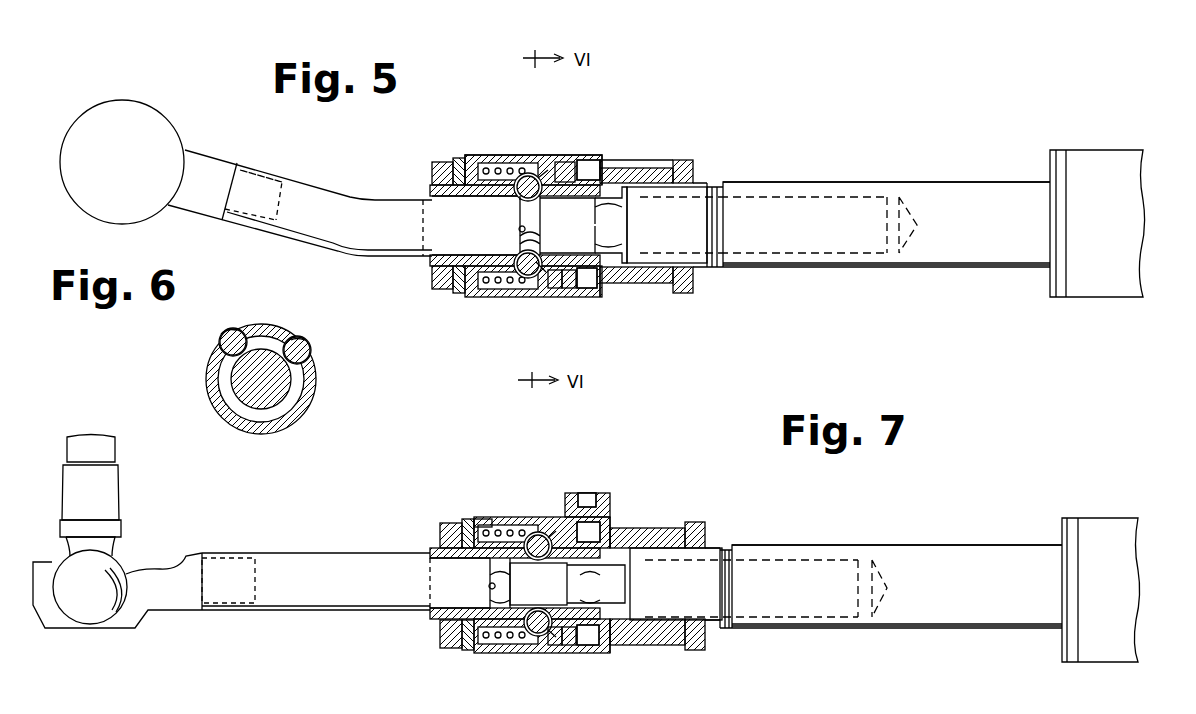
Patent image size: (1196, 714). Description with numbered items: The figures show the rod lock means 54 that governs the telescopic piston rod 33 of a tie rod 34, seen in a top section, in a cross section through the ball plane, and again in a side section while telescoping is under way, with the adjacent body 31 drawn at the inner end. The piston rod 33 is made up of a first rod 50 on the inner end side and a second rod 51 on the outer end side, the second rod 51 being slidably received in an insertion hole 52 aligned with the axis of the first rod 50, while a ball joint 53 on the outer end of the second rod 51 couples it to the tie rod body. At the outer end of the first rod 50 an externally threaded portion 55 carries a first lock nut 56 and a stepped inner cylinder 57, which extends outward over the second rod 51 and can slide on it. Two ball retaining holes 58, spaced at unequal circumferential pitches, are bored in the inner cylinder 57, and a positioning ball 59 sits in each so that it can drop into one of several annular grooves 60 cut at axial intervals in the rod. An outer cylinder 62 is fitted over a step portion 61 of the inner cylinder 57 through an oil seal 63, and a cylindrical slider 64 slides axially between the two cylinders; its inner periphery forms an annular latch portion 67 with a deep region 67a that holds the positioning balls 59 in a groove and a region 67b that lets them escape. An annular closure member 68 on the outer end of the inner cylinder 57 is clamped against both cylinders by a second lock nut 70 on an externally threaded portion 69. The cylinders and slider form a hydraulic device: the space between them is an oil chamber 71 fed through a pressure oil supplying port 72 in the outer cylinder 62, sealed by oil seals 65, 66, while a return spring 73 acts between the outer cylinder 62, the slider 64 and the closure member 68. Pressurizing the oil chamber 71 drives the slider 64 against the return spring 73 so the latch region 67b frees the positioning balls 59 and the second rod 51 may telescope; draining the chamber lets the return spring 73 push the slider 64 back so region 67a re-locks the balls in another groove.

In FIG. 5, the body 31 is at (1095, 160).
In FIG. 7, the body 31 is at (1106, 530).
In FIG. 5, the piston rod 33 is at (968, 188).
In FIG. 7, the piston rod 33 is at (962, 552).
In FIG. 5, the tie rod 34 is at (846, 176).
In FIG. 7, the tie rod 34 is at (880, 545).
In FIG. 5, the first rod 50 is at (956, 262).
In FIG. 7, the first rod 50 is at (966, 620).
In FIG. 5, the second rod 51 is at (340, 200).
In FIG. 6, the second rod 51 is at (268, 405).
In FIG. 7, the second rod 51 is at (386, 608).
In FIG. 5, the insertion hole 52 is at (806, 258).
In FIG. 7, the insertion hole 52 is at (844, 620).
In FIG. 5, the ball joint 53 is at (162, 163).
In FIG. 7, the ball joint 53 is at (124, 568).
In FIG. 5, the rod lock means 54 is at (512, 149).
In FIG. 7, the rod lock means 54 is at (530, 511).
In FIG. 5, the externally threaded portion 55 is at (660, 283).
In FIG. 7, the externally threaded portion 55 is at (672, 540).
In FIG. 5, the first lock nut 56 is at (693, 168).
In FIG. 7, the first lock nut 56 is at (705, 540).
In FIG. 5, the inner cylinder 57 is at (636, 283).
In FIG. 6, the inner cylinder 57 is at (236, 426).
In FIG. 7, the inner cylinder 57 is at (648, 528).
In FIG. 5, the ball retaining hole 58 is at (535, 182).
In FIG. 6, the ball retaining hole 58 is at (252, 330).
In FIG. 7, the ball retaining hole 58 is at (546, 540).
In FIG. 5, the positioning ball 59 is at (536, 176).
In FIG. 6, the positioning ball 59 is at (224, 333).
In FIG. 7, the positioning ball 59 is at (548, 536).
In FIG. 5, the annular groove 60 is at (520, 236).
In FIG. 7, the annular groove 60 is at (490, 583).
In FIG. 5, the step portion 61 is at (592, 176).
In FIG. 7, the step portion 61 is at (600, 530).
In FIG. 5, the outer cylinder 62 is at (572, 165).
In FIG. 7, the outer cylinder 62 is at (480, 519).
In FIG. 5, the oil seal 63 is at (598, 292).
In FIG. 7, the oil seal 63 is at (612, 517).
In FIG. 5, the cylindrical slider 64 is at (462, 293).
In FIG. 7, the cylindrical slider 64 is at (470, 650).
In FIG. 5, the oil seal 65 is at (556, 290).
In FIG. 7, the oil seal 65 is at (560, 645).
In FIG. 5, the oil seal 66 is at (568, 290).
In FIG. 7, the oil seal 66 is at (572, 645).
In FIG. 5, the annular latch portion 67 is at (611, 225).
In FIG. 5, the portion having a depth to prevent disengagement 67a is at (586, 238).
In FIG. 7, the portion having a depth to prevent disengagement 67a is at (538, 587).
In FIG. 5, the depth to allow disengagement 67b is at (586, 216).
In FIG. 7, the depth to allow disengagement 67b is at (598, 588).
In FIG. 5, the annular closure member 68 is at (458, 158).
In FIG. 7, the annular closure member 68 is at (466, 519).
In FIG. 5, the externally threaded portion 69 is at (440, 289).
In FIG. 7, the externally threaded portion 69 is at (440, 540).
In FIG. 5, the second lock nut 70 is at (432, 170).
In FIG. 7, the second lock nut 70 is at (444, 523).
In FIG. 5, the oil chamber 71 is at (584, 290).
In FIG. 7, the oil chamber 71 is at (588, 640).
In FIG. 7, the pressure oil supplying port 72 is at (592, 497).
In FIG. 5, the return spring 73 is at (484, 165).
In FIG. 7, the return spring 73 is at (500, 527).